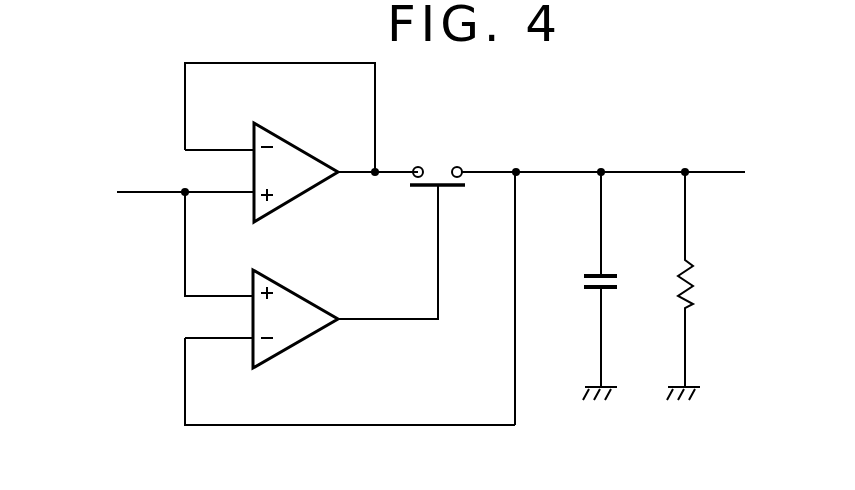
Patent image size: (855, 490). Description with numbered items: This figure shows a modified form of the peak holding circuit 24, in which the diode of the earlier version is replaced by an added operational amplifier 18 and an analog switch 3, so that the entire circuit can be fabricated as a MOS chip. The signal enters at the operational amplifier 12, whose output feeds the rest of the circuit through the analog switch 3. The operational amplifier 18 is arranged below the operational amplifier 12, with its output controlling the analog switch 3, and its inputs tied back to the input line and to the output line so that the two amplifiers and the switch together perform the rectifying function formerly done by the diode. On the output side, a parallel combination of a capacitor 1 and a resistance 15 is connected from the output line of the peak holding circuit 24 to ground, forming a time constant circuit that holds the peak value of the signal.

The operational amplifier OP12 12 is at (301, 142).
The operational amplifier OP18 18 is at (350, 305).
The analog switch SW3 3 is at (440, 170).
The peak holding circuit 24 is at (554, 140).
The capacitor C1 1 is at (618, 286).
The resistance R15 15 is at (703, 286).